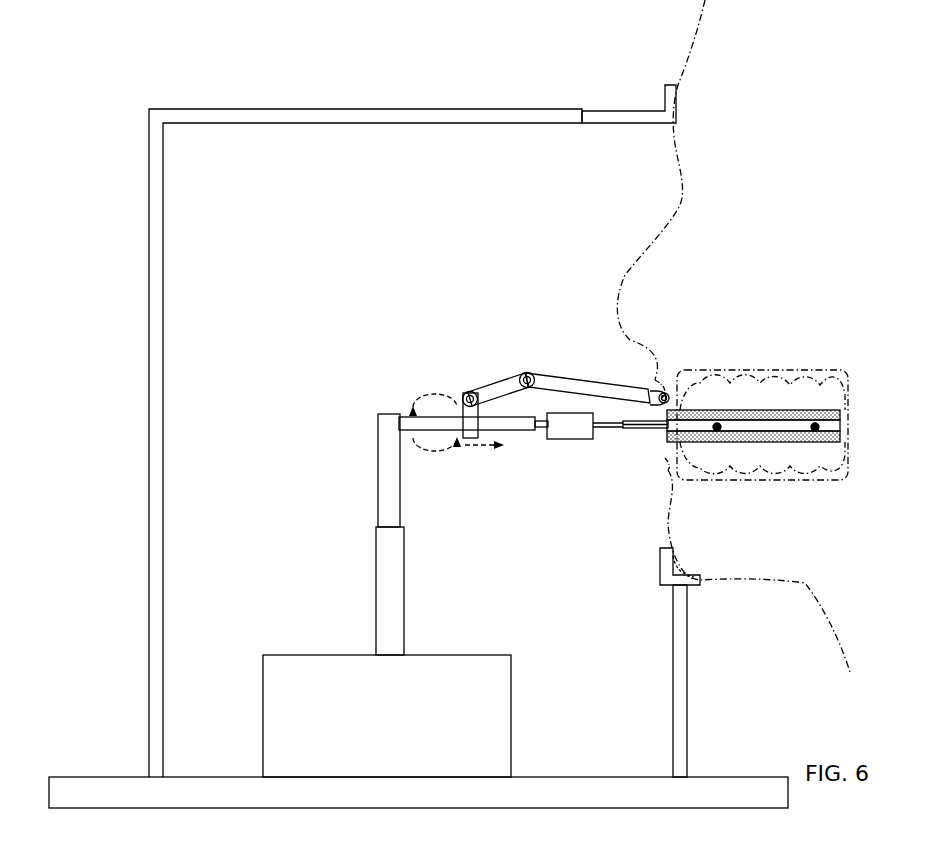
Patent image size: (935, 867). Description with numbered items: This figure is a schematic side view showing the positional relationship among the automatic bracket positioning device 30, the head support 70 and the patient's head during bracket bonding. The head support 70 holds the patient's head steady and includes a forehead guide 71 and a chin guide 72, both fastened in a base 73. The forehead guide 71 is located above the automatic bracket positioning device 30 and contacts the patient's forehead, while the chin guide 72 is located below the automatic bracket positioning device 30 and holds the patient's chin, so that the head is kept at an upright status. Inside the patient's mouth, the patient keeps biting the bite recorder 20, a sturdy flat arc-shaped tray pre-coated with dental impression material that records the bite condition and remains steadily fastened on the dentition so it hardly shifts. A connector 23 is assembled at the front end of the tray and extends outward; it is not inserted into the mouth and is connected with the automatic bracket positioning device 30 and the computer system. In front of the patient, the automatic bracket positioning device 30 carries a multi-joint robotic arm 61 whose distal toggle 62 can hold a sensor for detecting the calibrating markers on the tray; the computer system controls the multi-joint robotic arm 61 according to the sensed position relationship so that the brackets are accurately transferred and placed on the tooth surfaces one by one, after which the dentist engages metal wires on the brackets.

The bite recorder 20 is at (790, 430).
The connector 23 is at (648, 428).
The automatic bracket positioning device 30 is at (534, 352).
The multi-joint robotic arm 61 is at (585, 366).
The distal toggle 62 is at (555, 375).
The head support 70 is at (146, 236).
The forehead guide 71 is at (632, 117).
The chin guide 72 is at (658, 572).
The base 73 is at (608, 775).